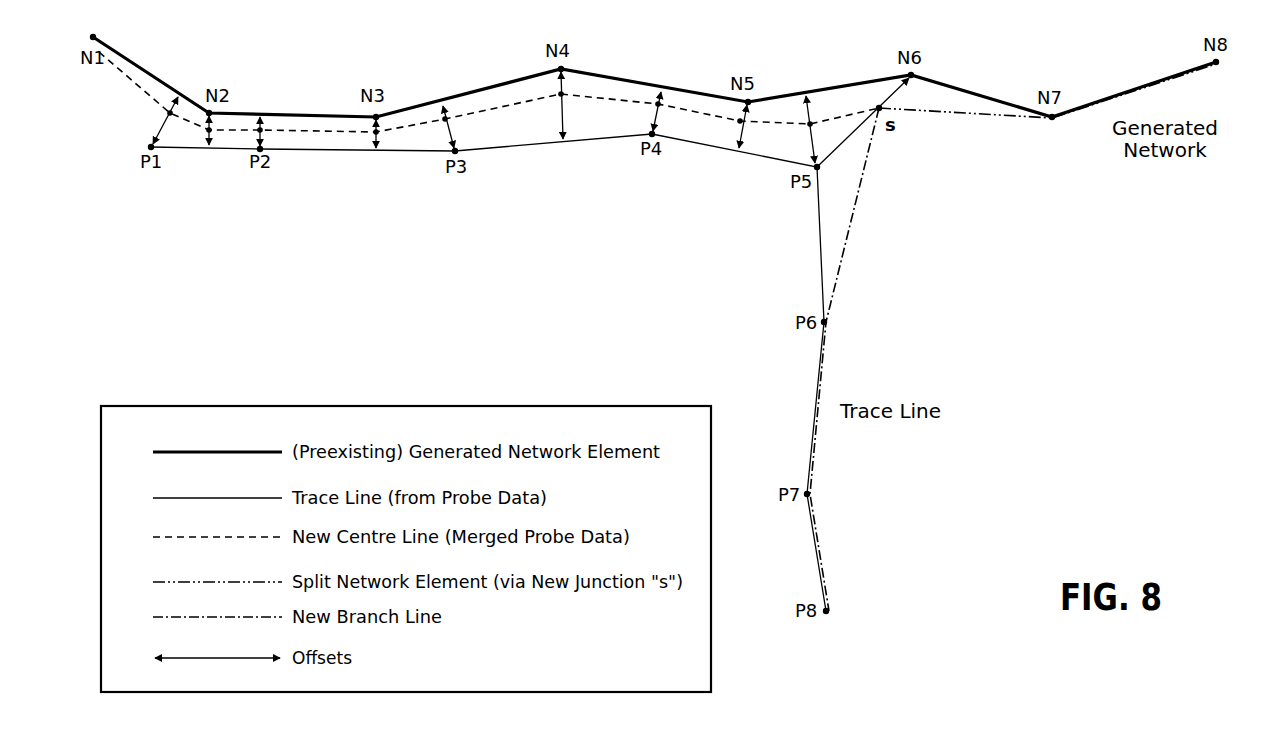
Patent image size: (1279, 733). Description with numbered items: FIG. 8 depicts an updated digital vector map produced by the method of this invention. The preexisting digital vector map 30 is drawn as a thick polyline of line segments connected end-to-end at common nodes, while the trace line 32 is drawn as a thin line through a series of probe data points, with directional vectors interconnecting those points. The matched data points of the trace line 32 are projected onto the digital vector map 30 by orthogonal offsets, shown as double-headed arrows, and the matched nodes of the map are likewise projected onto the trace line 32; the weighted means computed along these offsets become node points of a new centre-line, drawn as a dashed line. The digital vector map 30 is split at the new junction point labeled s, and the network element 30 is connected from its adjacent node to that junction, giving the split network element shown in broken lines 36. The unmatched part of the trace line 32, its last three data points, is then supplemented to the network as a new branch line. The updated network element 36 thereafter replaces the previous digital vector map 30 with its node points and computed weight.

The digital vector map 30 is at (984, 87).
The trace line 32 is at (812, 244).
The updated network element 36 is at (955, 122).